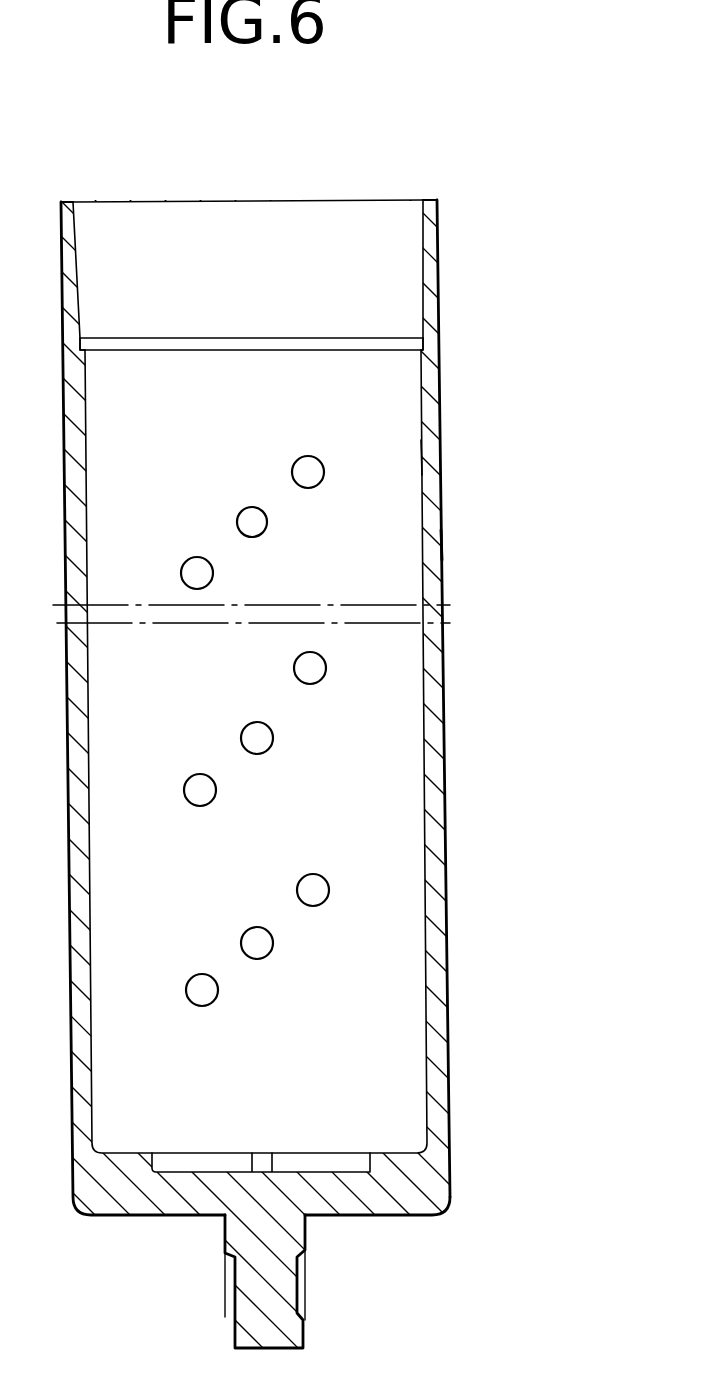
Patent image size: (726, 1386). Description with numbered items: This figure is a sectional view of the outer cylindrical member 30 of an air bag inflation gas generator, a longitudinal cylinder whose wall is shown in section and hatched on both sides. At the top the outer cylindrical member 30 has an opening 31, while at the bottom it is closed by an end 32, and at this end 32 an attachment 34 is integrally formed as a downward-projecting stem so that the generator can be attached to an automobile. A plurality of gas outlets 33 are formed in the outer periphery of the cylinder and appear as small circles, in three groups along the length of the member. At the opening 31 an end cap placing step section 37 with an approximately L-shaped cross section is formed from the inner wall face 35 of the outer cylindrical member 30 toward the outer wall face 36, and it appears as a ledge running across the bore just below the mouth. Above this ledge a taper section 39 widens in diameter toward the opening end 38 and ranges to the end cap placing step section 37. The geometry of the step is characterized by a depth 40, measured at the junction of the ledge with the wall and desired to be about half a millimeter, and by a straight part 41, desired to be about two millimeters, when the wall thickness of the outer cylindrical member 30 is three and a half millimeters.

The outer cylindrical member 30 is at (363, 693).
The opening 31 is at (440, 235).
The end 32 is at (430, 1198).
The gas outlets 33 is at (196, 558).
The attachment 34 is at (280, 1297).
The inner wall face 35 is at (422, 464).
The outer wall face 36 is at (443, 548).
The end cap placing step section 37 is at (388, 335).
The opening end 38 is at (430, 196).
The taper section 39 is at (74, 244).
The depth 40 is at (434, 349).
The straight part 41 is at (80, 350).